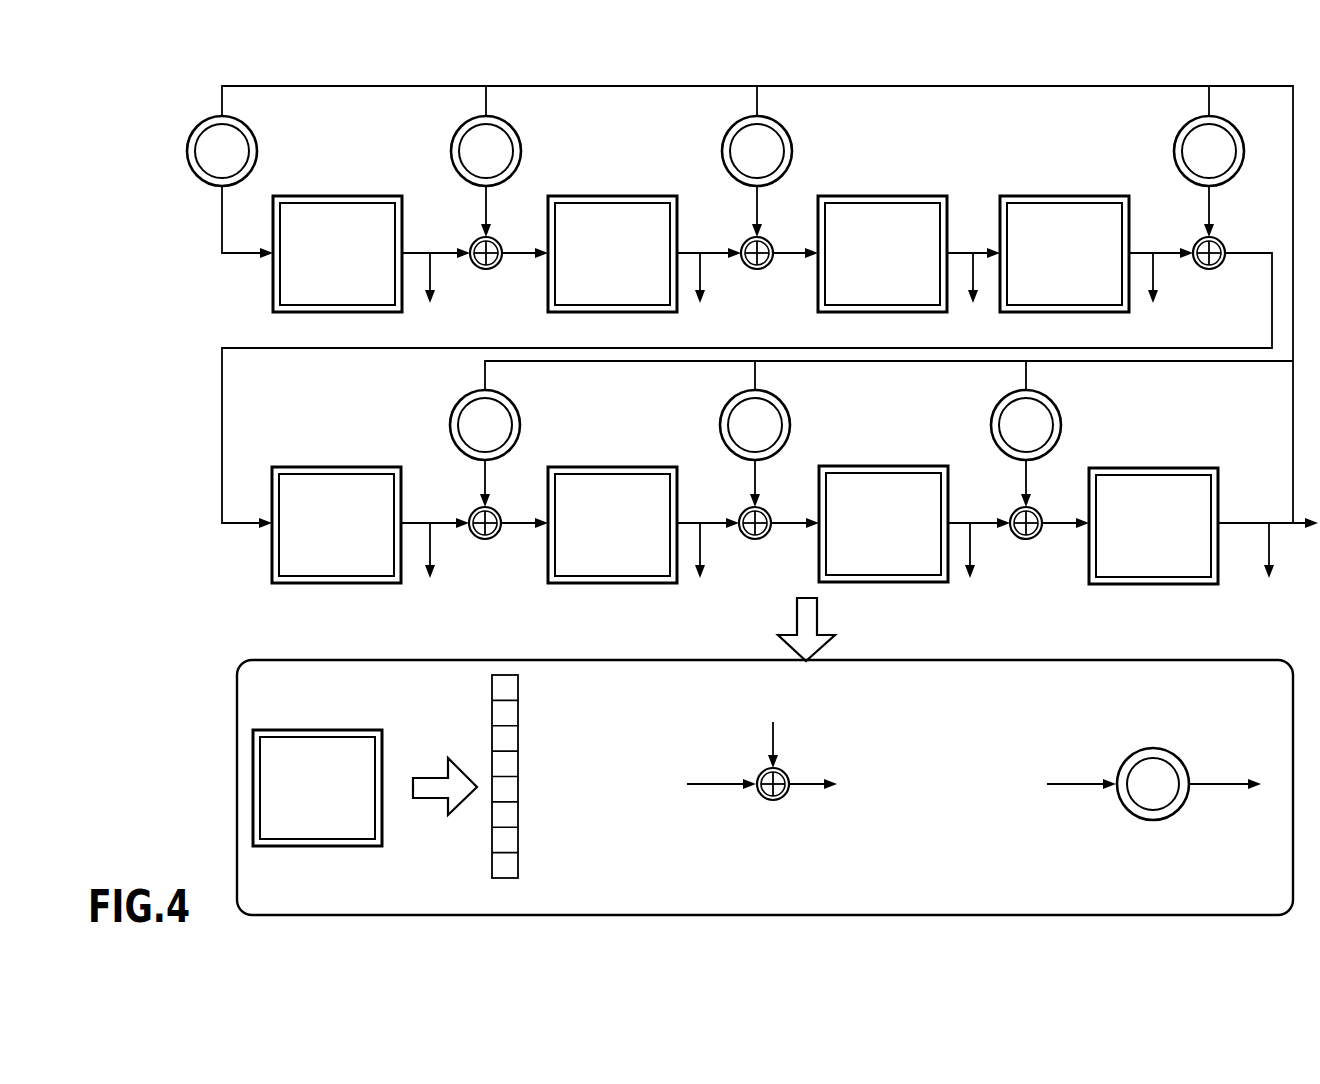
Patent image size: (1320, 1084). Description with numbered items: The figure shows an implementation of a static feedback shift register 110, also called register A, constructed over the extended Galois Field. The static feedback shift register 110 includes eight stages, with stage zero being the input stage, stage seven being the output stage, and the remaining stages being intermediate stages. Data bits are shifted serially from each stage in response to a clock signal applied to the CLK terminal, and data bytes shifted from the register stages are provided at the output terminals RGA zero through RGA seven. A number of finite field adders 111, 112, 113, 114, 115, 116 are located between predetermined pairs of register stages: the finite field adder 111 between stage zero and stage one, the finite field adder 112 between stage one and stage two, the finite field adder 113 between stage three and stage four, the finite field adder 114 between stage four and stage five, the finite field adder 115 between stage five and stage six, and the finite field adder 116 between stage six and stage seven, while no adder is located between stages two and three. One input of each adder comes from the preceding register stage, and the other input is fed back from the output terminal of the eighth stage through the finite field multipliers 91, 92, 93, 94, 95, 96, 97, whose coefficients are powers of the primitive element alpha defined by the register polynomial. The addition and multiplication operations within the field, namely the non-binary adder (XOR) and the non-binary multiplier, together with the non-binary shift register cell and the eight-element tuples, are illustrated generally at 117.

The static feedback shift register 110 is at (178, 114).
The finite field multiplier 91 is at (251, 130).
The finite field multiplier 92 is at (515, 130).
The finite field multiplier 93 is at (786, 130).
The finite field multiplier 94 is at (1182, 132).
The finite field multiplier 95 is at (514, 405).
The finite field multiplier 96 is at (784, 405).
The finite field multiplier 97 is at (1055, 405).
The finite field adder 111 is at (486, 270).
The finite field adder 112 is at (757, 270).
The finite field adder 113 is at (1209, 270).
The finite field adder 114 is at (485, 540).
The finite field adder 115 is at (755, 540).
The finite field adder 116 is at (1026, 540).
The illustration of non-binary adder and multiplier functions 117 is at (177, 716).